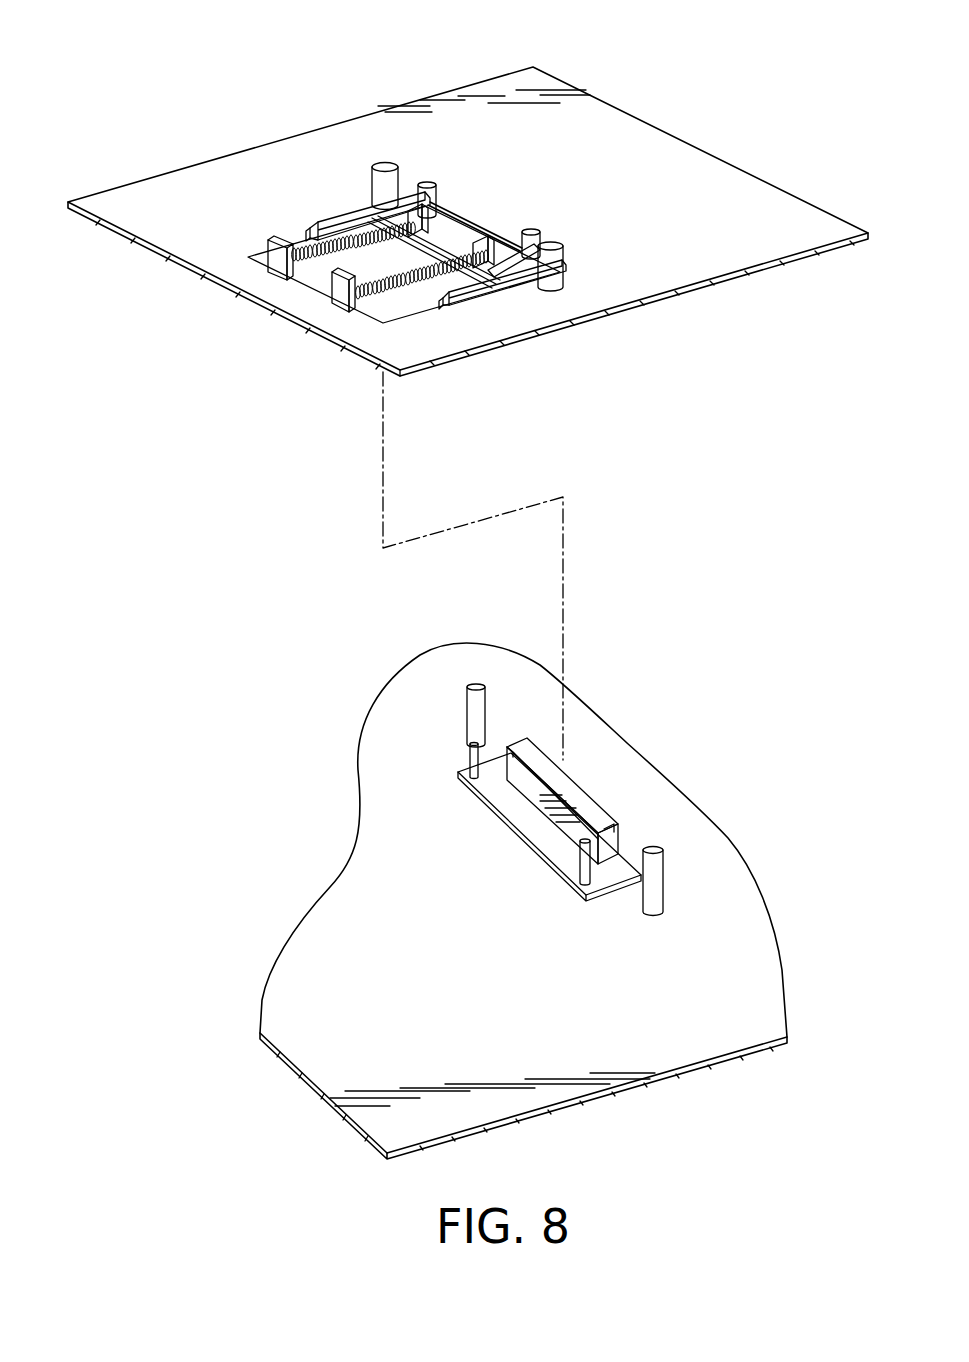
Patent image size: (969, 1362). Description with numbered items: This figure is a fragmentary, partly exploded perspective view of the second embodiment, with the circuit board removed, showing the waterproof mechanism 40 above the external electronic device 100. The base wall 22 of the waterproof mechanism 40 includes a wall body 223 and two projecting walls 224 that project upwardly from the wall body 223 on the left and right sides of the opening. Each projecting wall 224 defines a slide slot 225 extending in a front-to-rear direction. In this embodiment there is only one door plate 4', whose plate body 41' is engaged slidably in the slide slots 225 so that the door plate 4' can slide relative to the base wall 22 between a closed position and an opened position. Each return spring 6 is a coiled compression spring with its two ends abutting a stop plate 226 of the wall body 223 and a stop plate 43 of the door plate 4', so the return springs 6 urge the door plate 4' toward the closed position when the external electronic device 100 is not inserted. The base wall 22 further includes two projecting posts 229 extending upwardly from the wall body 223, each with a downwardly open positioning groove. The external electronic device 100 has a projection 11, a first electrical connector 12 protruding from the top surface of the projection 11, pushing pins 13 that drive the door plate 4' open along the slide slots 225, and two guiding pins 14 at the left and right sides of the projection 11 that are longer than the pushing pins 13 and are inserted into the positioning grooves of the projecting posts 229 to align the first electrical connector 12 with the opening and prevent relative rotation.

The waterproof mechanism 40 is at (352, 104).
The base wall 22 is at (760, 286).
The wall body 223 is at (626, 290).
The projecting walls 224 is at (336, 208).
The slide slot 225 is at (304, 232).
The stop plate 226 is at (343, 296).
The projecting posts 229 is at (556, 263).
The door plate 4' is at (440, 200).
The plate body 41' is at (497, 193).
The stop plate 43 is at (490, 264).
The return springs 6 is at (387, 290).
The external electronic device 100 is at (350, 728).
The projection 11 is at (533, 820).
The first electrical connector 12 is at (532, 785).
The pushing pins 13 is at (580, 862).
The guiding pins 14 is at (652, 884).